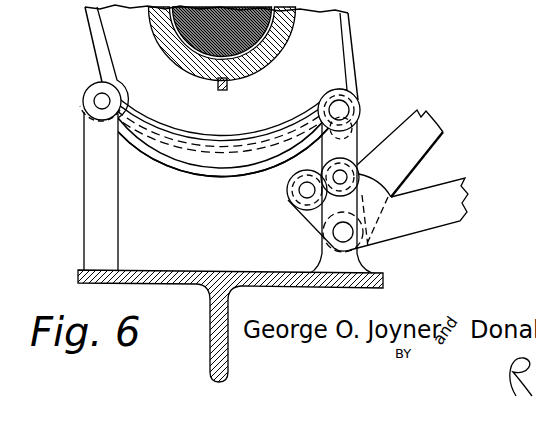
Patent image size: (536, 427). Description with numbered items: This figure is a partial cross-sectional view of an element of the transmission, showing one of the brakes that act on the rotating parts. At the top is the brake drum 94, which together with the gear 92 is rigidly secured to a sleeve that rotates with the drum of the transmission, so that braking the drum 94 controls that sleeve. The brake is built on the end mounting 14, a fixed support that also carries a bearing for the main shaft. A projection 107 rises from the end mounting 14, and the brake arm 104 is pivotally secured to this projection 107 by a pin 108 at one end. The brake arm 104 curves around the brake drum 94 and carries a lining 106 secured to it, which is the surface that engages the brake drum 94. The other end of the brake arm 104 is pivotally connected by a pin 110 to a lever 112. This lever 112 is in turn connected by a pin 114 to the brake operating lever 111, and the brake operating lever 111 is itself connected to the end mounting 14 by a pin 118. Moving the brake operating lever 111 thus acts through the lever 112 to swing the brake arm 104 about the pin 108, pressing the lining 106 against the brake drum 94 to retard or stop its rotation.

The end mounting 14 is at (205, 292).
The gear 92 is at (86, 32).
The brake drum 94 is at (343, 51).
The brake arm 104 is at (195, 171).
The lining 106 is at (243, 143).
The projection 107 is at (86, 215).
The pin 108 is at (100, 103).
The pin 110 is at (344, 109).
The brake operating lever 111 is at (413, 227).
The lever 112 is at (367, 133).
The pin 114 is at (307, 191).
The pin 118 is at (343, 232).